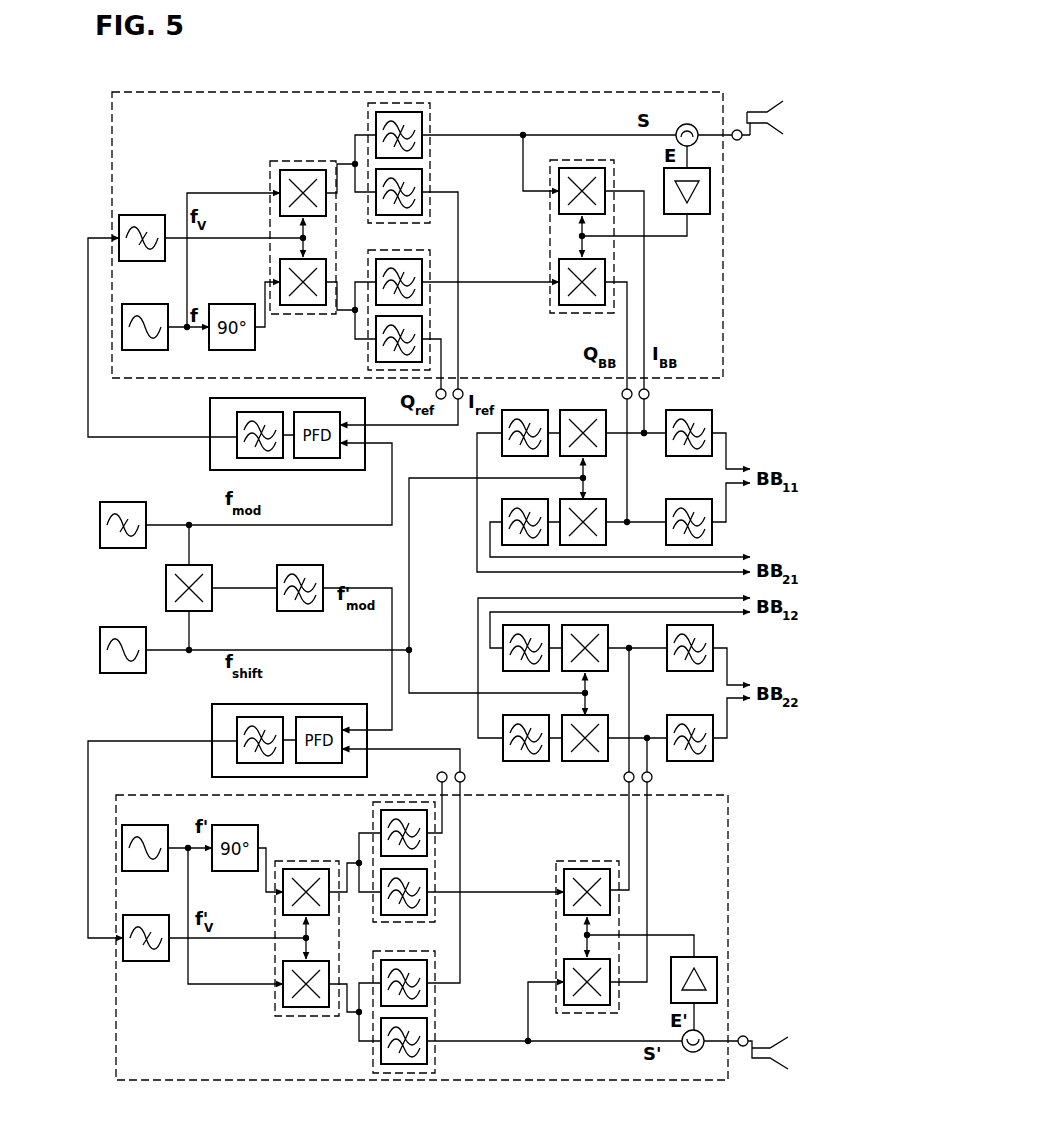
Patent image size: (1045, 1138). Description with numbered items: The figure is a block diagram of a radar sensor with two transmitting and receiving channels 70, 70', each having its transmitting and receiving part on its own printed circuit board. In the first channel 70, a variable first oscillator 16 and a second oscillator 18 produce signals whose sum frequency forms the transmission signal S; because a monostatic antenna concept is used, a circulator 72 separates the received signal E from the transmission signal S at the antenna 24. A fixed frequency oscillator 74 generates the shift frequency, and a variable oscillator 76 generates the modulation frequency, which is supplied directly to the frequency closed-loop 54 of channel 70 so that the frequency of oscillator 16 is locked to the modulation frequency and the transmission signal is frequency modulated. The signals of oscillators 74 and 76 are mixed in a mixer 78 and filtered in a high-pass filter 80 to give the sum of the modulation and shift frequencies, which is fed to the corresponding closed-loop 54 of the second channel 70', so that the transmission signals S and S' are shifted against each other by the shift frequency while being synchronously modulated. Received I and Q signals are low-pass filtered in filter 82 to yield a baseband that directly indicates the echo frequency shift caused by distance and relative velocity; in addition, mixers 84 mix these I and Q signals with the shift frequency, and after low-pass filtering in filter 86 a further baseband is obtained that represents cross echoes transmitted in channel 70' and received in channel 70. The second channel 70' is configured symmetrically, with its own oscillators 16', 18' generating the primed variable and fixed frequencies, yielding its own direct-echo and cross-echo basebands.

The first oscillator 16 is at (142, 210).
The second oscillator 18 is at (145, 364).
The antenna 24 is at (760, 112).
The frequency closed-loop 54 is at (210, 448).
The first channel 70 is at (417, 206).
The circulator 72 is at (687, 124).
The fixed frequency oscillator 74 is at (118, 673).
The variable oscillator 76 is at (124, 502).
The mixer 78 is at (208, 566).
The high-pass filter 80 is at (320, 566).
The low-pass filter 82 is at (712, 420).
The mixers 84 is at (592, 410).
The filter 86 is at (502, 422).
The first oscillator of second channel 16' is at (146, 968).
The second oscillator of second channel 18' is at (145, 813).
The second channel 70' is at (422, 961).